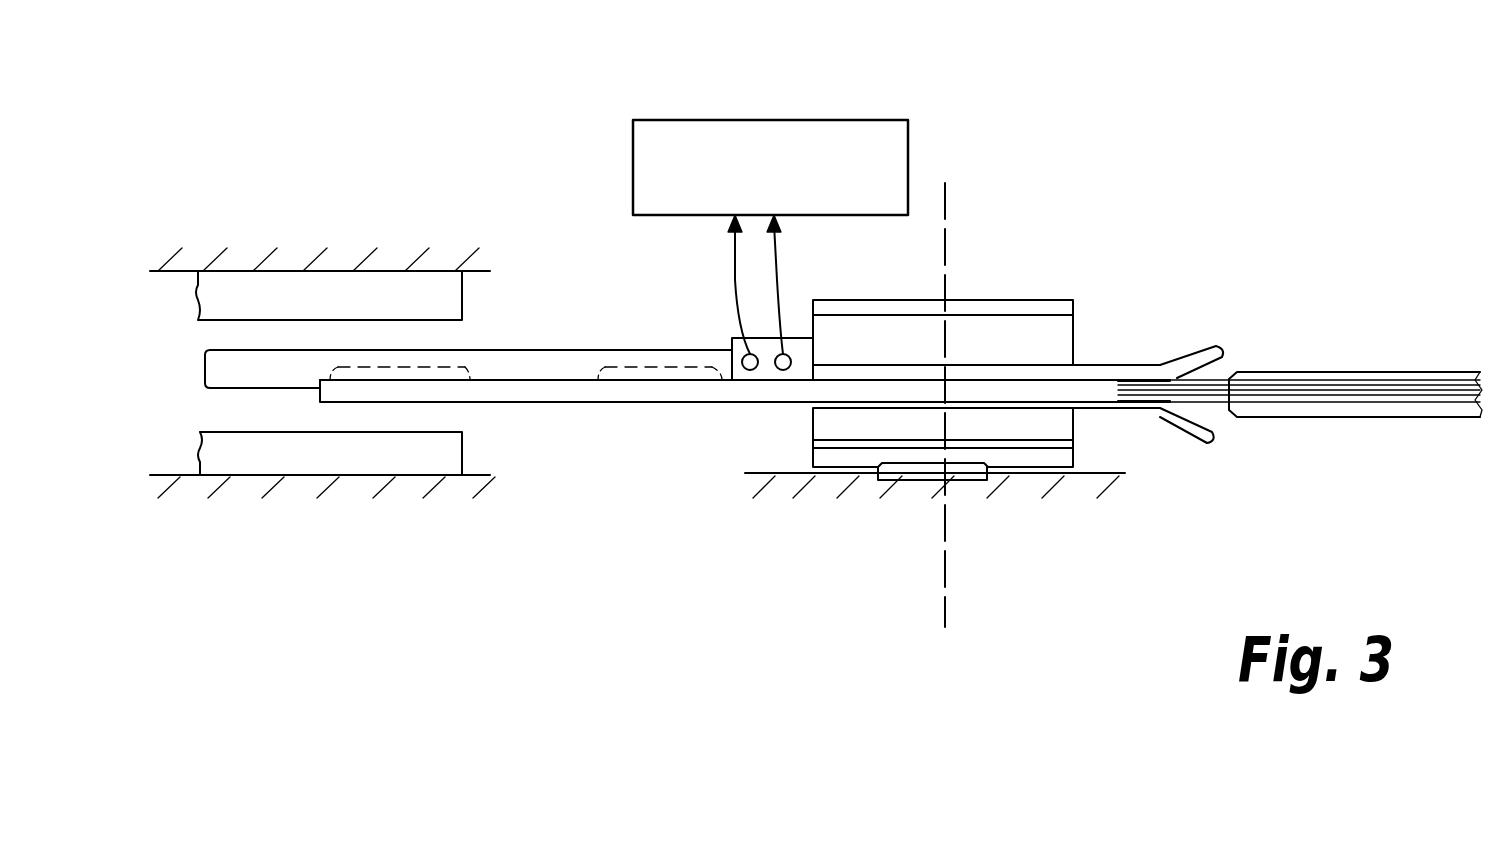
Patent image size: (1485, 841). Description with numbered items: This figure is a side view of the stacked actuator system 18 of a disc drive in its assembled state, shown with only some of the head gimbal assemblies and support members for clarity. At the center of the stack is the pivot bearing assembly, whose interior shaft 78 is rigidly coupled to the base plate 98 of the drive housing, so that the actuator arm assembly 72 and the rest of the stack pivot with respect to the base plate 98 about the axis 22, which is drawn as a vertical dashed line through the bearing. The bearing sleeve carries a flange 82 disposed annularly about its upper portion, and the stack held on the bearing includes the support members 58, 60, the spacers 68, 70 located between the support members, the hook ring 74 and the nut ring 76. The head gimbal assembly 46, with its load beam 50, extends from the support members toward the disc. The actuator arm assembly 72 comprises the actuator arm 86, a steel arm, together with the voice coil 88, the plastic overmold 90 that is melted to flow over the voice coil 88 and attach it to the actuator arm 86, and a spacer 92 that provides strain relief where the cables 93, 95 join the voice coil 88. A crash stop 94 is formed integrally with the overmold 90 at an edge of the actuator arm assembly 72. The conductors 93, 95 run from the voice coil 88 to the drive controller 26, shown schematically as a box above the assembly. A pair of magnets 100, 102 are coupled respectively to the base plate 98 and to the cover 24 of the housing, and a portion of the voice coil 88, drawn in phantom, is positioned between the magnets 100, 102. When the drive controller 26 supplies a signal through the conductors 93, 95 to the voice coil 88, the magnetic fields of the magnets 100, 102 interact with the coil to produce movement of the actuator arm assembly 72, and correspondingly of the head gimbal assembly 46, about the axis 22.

The stacked actuator system 18 is at (1078, 144).
The axis 22 is at (945, 237).
The cover 24 is at (199, 264).
The drive controller 26 is at (672, 132).
The head gimbal assembly 46 is at (1388, 418).
The load beam 50 is at (1384, 374).
The support member 58 is at (1225, 342).
The support member 60 is at (1216, 443).
The spacer 68 is at (1076, 333).
The spacer 70 is at (812, 412).
The actuator arm assembly 72 is at (630, 408).
The hook ring 74 is at (812, 446).
The nut ring 76 is at (833, 455).
The shaft 78 is at (988, 475).
The flange 82 is at (1076, 305).
The actuator arm 86 is at (508, 390).
The voice coil 88 is at (445, 365).
The overmold 90 is at (533, 350).
The spacer 92 is at (732, 353).
The cable 93 is at (728, 283).
The crash stop 94 is at (236, 377).
The cable 95 is at (779, 270).
The base plate 98 is at (242, 483).
The magnet 100 is at (345, 453).
The magnet 102 is at (280, 292).